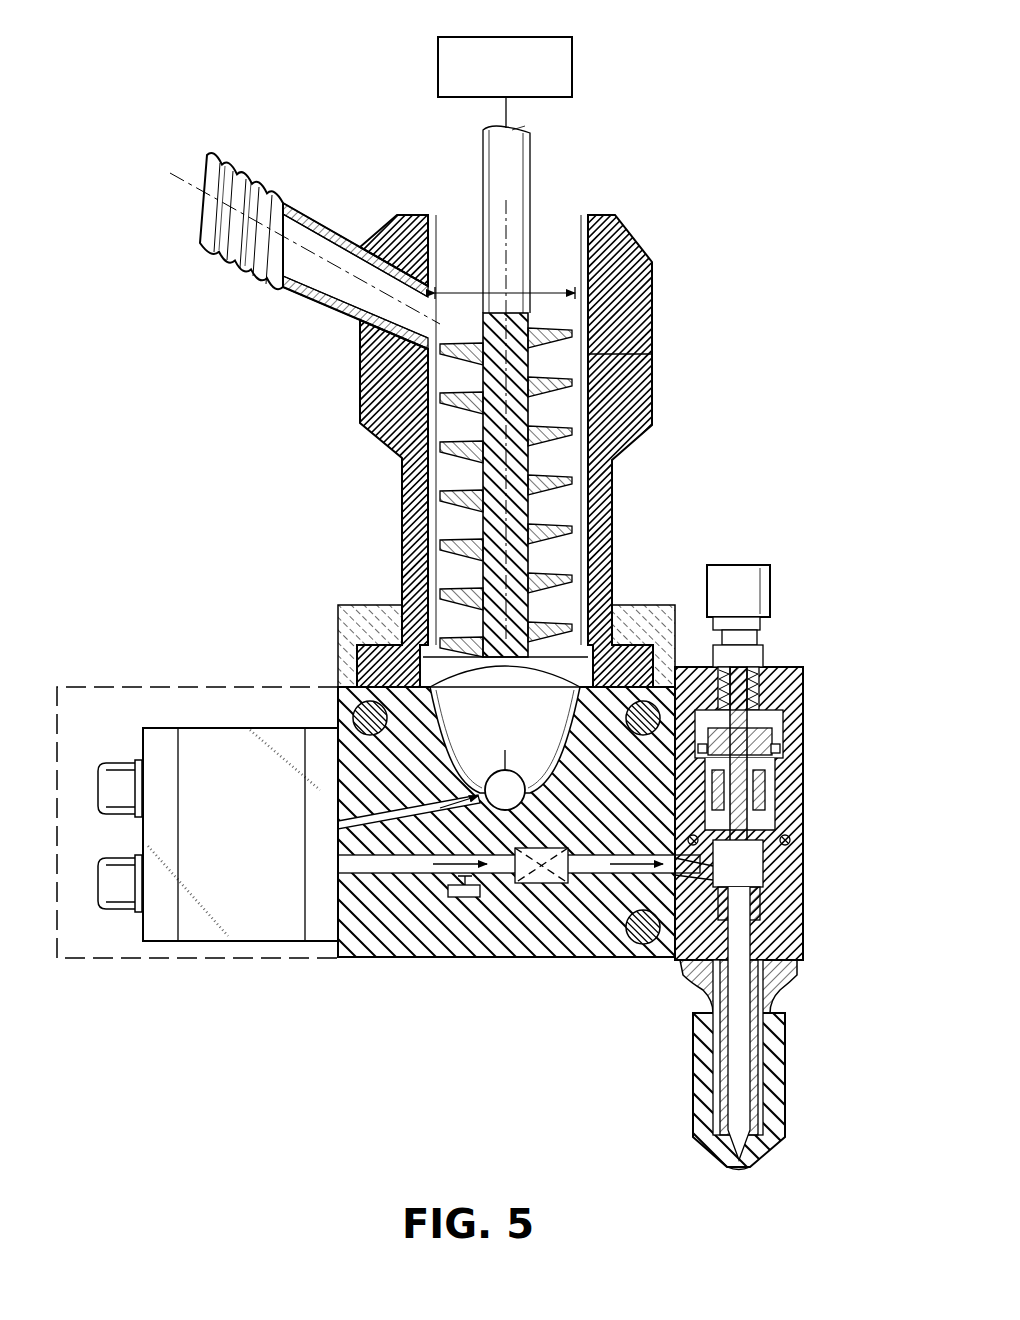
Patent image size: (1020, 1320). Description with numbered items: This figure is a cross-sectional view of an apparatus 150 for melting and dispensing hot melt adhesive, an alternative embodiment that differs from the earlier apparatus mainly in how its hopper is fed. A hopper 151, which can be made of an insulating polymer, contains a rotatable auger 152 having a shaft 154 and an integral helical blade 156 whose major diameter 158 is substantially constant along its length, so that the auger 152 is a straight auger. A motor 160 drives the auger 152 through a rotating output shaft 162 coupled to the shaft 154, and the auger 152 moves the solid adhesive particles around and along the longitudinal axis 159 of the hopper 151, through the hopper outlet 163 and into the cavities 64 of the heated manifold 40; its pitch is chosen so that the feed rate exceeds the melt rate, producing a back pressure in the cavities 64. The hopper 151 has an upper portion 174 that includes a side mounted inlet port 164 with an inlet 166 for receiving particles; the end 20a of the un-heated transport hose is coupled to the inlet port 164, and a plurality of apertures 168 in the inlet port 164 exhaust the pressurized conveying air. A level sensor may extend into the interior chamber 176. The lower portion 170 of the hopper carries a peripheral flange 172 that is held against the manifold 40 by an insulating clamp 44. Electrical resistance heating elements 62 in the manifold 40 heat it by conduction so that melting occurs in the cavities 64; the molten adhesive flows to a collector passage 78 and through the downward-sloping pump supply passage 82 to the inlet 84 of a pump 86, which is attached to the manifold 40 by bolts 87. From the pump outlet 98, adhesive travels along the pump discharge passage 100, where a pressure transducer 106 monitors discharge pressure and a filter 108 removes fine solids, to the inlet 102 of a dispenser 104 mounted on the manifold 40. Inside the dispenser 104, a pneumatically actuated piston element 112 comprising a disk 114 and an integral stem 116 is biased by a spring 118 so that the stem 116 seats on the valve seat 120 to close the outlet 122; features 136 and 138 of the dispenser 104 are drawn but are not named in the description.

The apparatus for melting and dispensing hot melt adhesive 150 is at (742, 55).
The motor 160 is at (548, 37).
The rotating output shaft 162 is at (508, 108).
The longitudinal axis 159 is at (505, 212).
The shaft 154 is at (533, 236).
The major diameter 158 is at (547, 288).
The hopper 151 is at (656, 293).
The upper portion 174 is at (653, 396).
The lower portion 170 is at (613, 512).
The auger 152 is at (532, 462).
The helical blade 156 is at (548, 372).
The interior chamber 176 is at (448, 438).
The end of transport hose 20a is at (292, 192).
The inlet 166 is at (290, 205).
The apertures 168 is at (345, 317).
The inlet port 164 is at (357, 322).
The clamp 44 is at (620, 607).
The peripheral flange 172 is at (637, 623).
The heated manifold 40 is at (366, 962).
The outlet 163 is at (432, 690).
The cavities 64 is at (518, 733).
The collector passage 78 is at (527, 798).
The pump inlet 84 is at (372, 814).
The pump supply passage 82 is at (445, 826).
The pump outlet 98 is at (348, 867).
The pump discharge passage 100 is at (447, 892).
The pressure transducer 106 is at (470, 900).
The filter 108 is at (552, 885).
The heating elements 62 is at (371, 736).
The pump 86 is at (252, 843).
The bolts 87 is at (113, 758).
The dispenser 104 is at (805, 732).
The spring 118 is at (752, 692).
The piston chamber 136 is at (770, 718).
The disk 114 is at (772, 745).
The lower chamber 138 is at (752, 773).
The piston element 112 is at (745, 805).
The stem 116 is at (745, 868).
The dispenser inlet 102 is at (695, 878).
The valve seat 120 is at (752, 1158).
The outlet 122 is at (739, 1172).